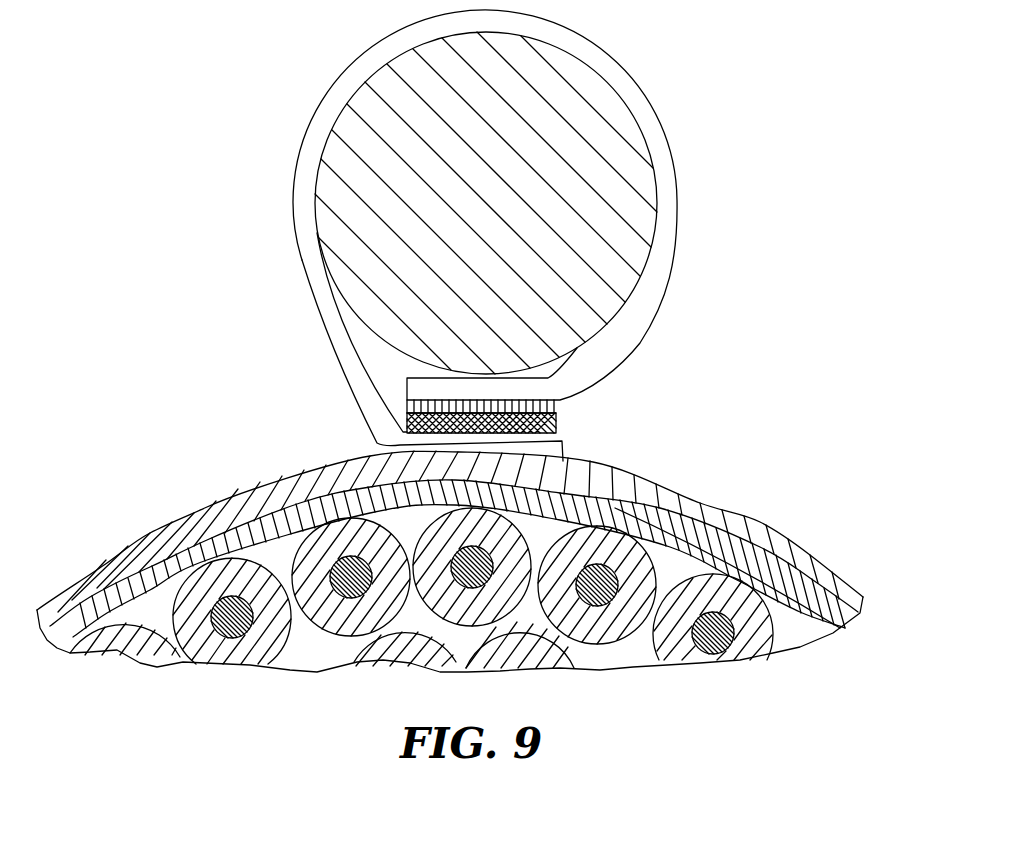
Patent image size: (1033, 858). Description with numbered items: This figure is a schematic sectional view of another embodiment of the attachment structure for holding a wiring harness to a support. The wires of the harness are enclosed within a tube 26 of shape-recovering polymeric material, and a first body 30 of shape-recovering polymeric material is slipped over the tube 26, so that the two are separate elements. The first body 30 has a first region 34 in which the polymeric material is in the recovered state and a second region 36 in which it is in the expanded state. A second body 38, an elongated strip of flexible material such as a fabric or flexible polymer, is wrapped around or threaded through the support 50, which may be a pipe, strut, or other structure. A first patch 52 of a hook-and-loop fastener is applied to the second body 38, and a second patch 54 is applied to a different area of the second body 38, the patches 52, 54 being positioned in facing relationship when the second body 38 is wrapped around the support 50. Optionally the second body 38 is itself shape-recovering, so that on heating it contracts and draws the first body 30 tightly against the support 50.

The tube 26 is at (157, 668).
The first body 30 is at (255, 468).
The first region 34 is at (590, 490).
The second region 36 is at (725, 524).
The second body 38 is at (322, 118).
The support 50 is at (350, 170).
The first patch 52 is at (556, 425).
The second patch 54 is at (564, 407).